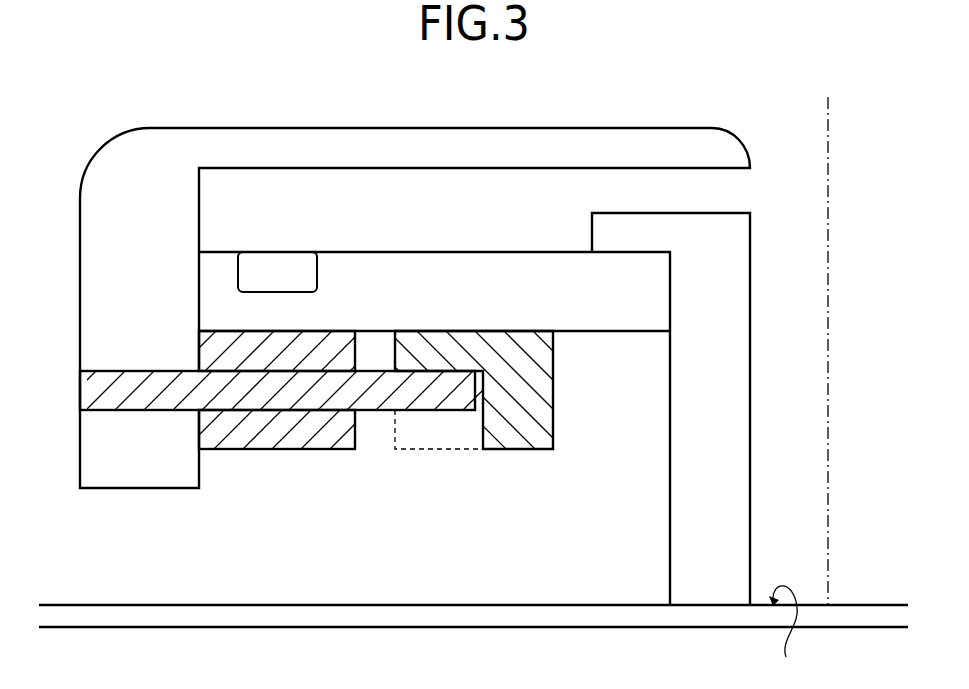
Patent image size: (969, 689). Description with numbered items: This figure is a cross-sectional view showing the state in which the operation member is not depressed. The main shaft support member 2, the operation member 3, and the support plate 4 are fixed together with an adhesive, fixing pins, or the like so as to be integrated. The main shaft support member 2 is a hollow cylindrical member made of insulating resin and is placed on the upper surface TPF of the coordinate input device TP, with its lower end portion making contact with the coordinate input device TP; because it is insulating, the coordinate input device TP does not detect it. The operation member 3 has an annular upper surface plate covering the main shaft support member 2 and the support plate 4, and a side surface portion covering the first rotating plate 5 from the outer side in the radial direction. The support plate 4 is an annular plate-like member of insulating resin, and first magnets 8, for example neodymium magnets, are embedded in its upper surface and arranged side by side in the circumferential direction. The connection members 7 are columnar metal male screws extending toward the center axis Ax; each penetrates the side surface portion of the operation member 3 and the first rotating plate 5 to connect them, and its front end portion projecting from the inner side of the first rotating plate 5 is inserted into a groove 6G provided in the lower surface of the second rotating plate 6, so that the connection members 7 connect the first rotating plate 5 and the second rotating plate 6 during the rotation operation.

The main shaft support member 2 is at (730, 232).
The operation member 3 is at (728, 148).
The support plate 4 is at (570, 268).
The first rotating plate 5 is at (218, 440).
The second rotating plate 6 is at (535, 431).
The groove 6G is at (412, 428).
The connection member 7 is at (92, 391).
The first magnet 8 is at (305, 268).
The coordinate input device TP is at (650, 618).
The upper surface of the coordinate input device TPF is at (785, 632).
The center axis Ax is at (828, 340).